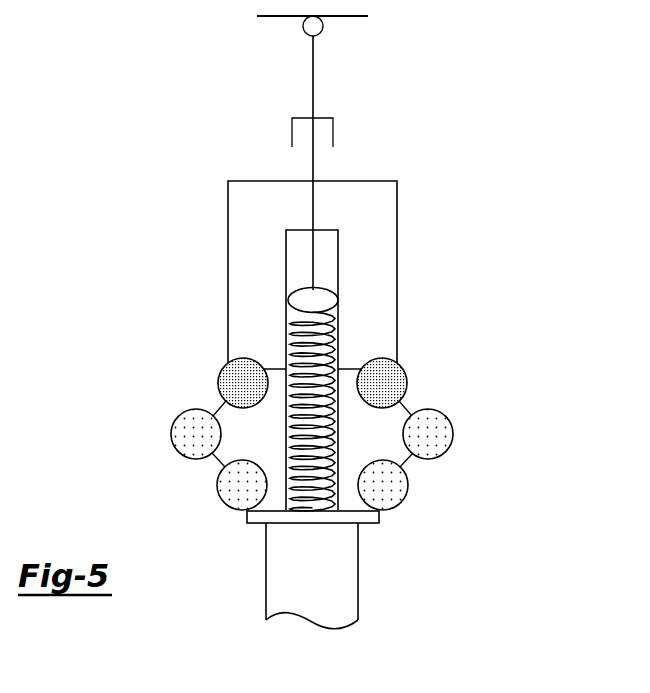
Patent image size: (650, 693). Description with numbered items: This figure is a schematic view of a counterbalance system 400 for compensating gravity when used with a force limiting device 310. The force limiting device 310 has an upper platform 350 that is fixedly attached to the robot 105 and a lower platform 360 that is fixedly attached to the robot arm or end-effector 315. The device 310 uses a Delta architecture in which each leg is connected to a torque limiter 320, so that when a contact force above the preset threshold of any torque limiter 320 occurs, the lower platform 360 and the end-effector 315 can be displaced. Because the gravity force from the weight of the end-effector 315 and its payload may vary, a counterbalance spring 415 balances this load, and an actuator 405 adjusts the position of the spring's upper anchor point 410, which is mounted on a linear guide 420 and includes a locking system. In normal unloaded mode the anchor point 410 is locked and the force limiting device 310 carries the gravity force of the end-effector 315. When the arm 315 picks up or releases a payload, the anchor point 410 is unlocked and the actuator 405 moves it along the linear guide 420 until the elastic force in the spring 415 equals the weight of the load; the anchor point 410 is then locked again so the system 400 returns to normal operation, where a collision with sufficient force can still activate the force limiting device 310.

The counterbalance system 400 is at (467, 195).
The linear guide 420 is at (315, 78).
The actuator 405 is at (333, 133).
The robot 105 is at (370, 226).
The upper platform 350 is at (277, 380).
The upper anchor point 410 is at (313, 300).
The counterbalance spring 415 is at (333, 336).
The lower platform 360 is at (380, 512).
The end-effector 315 is at (327, 587).
The force limiting device 310 is at (443, 462).
The torque limiter 320 is at (218, 383).